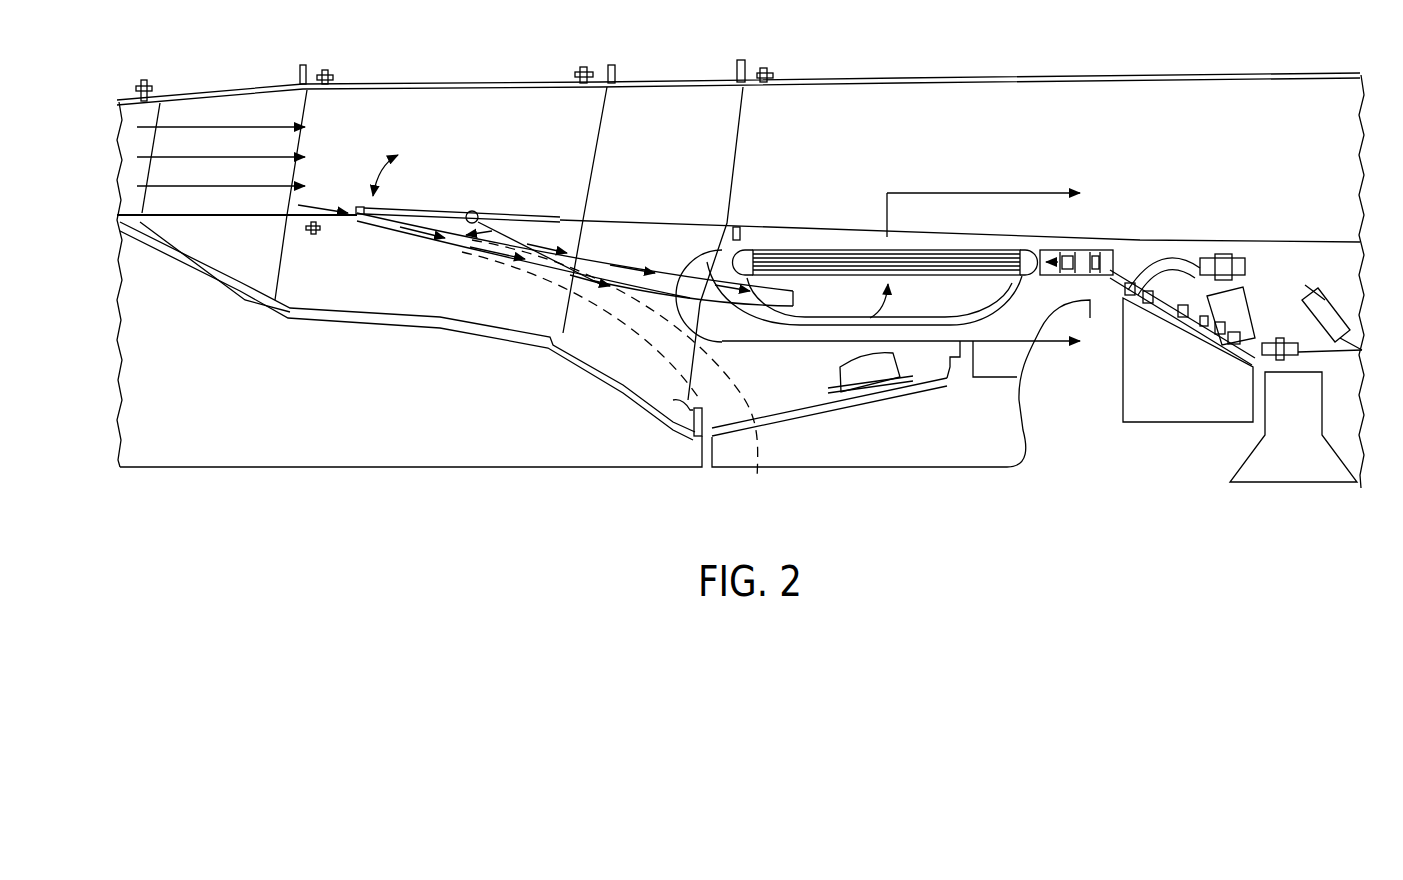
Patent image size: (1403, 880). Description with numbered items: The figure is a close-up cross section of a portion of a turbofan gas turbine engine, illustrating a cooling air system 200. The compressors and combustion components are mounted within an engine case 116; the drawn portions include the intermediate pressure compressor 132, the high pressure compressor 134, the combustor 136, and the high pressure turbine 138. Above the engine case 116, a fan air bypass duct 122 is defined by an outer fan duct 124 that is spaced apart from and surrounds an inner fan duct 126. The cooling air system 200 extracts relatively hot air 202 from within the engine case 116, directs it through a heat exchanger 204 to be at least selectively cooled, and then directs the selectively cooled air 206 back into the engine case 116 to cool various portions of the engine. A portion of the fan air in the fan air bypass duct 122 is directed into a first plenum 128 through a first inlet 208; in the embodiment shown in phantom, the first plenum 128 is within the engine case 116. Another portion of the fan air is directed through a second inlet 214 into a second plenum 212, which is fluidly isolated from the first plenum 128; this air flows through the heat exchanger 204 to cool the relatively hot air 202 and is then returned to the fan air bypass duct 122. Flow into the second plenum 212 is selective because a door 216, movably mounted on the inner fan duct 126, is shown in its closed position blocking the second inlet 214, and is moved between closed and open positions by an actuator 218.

The engine case 116 is at (620, 382).
The fan air bypass duct 122 is at (480, 134).
The outer fan duct 124 is at (928, 76).
The inner fan duct 126 is at (620, 221).
The first plenum 128 is at (625, 347).
The intermediate pressure compressor 132 is at (407, 466).
The high pressure compressor 134 is at (870, 466).
The combustor 136 is at (1187, 424).
The high pressure turbine 138 is at (1293, 483).
The cooling air system 200 is at (850, 210).
The relatively hot air 202 is at (1095, 250).
The heat exchanger 204 is at (807, 251).
The selectively cooled air 206 is at (783, 340).
The first inlet 208 is at (355, 222).
The second plenum 212 is at (953, 311).
The second inlet 214 is at (418, 217).
The door 216 is at (361, 207).
The actuator 218 is at (473, 211).